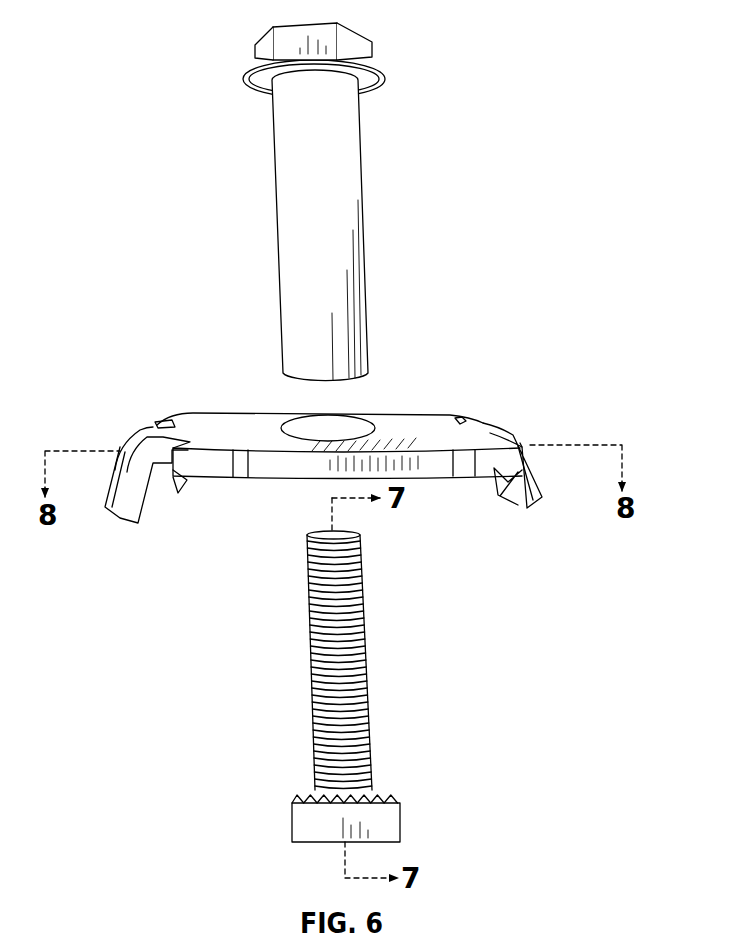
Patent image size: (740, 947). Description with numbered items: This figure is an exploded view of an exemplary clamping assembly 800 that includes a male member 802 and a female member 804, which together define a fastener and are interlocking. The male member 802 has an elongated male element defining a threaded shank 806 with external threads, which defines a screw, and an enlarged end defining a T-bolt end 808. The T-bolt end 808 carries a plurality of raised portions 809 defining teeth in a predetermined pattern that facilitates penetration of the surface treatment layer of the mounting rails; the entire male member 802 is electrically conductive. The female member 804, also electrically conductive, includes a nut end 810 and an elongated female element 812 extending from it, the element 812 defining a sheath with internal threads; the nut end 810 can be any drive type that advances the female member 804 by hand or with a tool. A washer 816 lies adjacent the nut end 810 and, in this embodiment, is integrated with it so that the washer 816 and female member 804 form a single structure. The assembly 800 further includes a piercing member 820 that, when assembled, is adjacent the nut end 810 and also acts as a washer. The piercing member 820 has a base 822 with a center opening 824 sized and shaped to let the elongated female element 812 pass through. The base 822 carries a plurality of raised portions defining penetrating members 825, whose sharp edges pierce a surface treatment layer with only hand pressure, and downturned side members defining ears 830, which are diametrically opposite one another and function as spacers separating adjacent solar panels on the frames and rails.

The clamping assembly 800 is at (520, 348).
The female member 804 is at (363, 252).
The nut end 810 is at (373, 55).
The elongated female element 812 is at (273, 207).
The washer 816 is at (372, 83).
The piercing member 820 is at (432, 415).
The base 822 is at (222, 422).
The center opening 824 is at (364, 434).
The penetrating members 825 is at (182, 490).
The ears 830 is at (528, 475).
The male member 802 is at (370, 685).
The threaded shank 806 is at (360, 628).
The T-bolt end 808 is at (400, 822).
The raised portions 809 is at (388, 797).